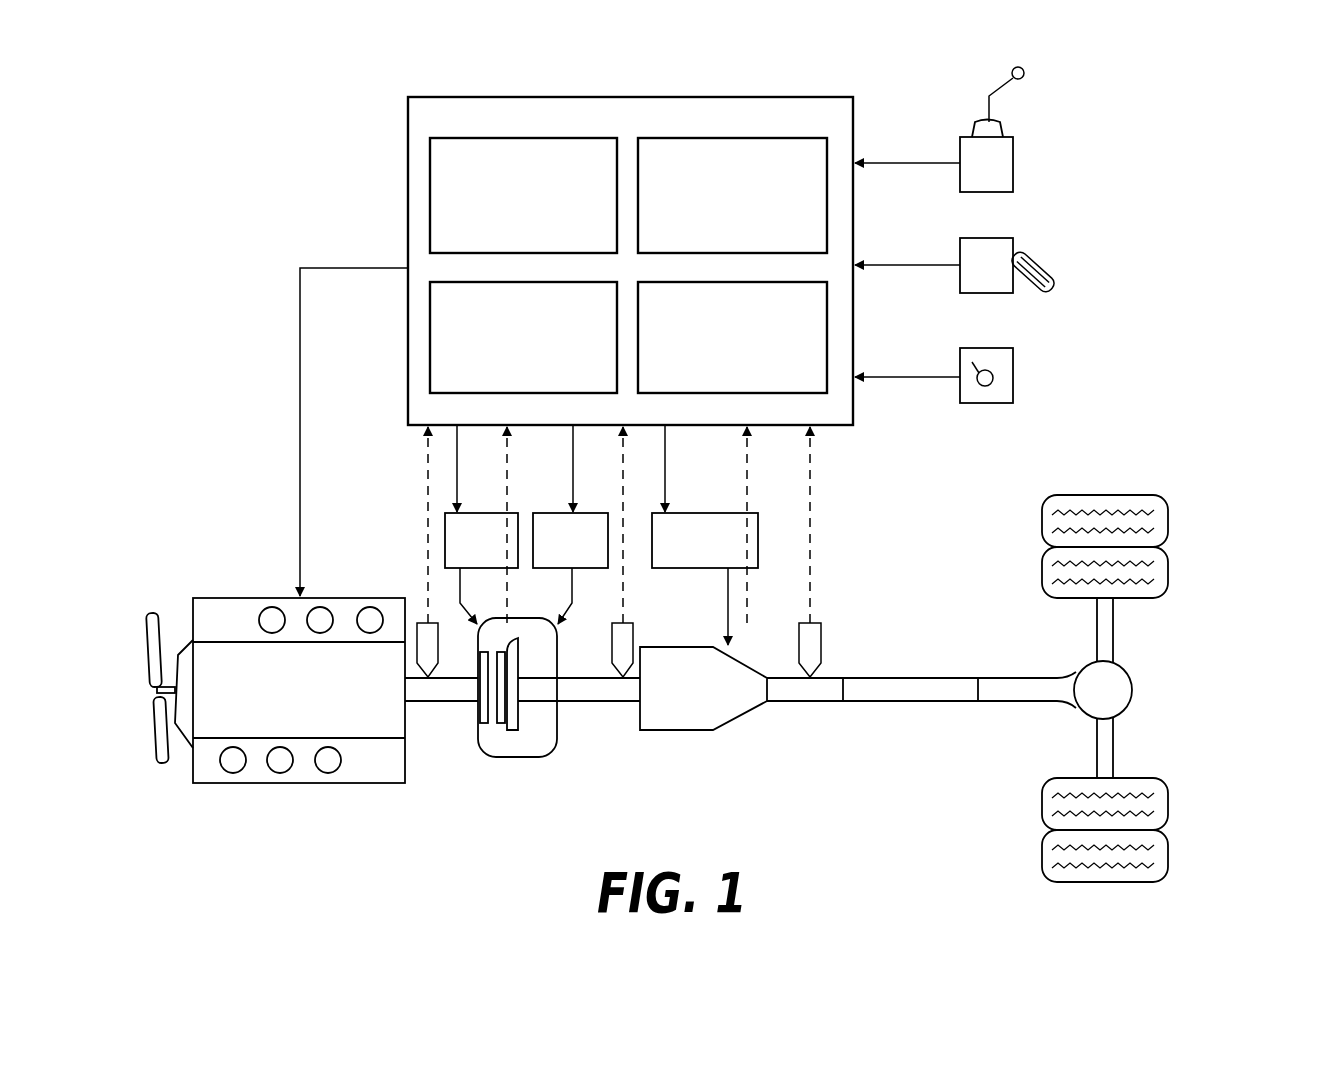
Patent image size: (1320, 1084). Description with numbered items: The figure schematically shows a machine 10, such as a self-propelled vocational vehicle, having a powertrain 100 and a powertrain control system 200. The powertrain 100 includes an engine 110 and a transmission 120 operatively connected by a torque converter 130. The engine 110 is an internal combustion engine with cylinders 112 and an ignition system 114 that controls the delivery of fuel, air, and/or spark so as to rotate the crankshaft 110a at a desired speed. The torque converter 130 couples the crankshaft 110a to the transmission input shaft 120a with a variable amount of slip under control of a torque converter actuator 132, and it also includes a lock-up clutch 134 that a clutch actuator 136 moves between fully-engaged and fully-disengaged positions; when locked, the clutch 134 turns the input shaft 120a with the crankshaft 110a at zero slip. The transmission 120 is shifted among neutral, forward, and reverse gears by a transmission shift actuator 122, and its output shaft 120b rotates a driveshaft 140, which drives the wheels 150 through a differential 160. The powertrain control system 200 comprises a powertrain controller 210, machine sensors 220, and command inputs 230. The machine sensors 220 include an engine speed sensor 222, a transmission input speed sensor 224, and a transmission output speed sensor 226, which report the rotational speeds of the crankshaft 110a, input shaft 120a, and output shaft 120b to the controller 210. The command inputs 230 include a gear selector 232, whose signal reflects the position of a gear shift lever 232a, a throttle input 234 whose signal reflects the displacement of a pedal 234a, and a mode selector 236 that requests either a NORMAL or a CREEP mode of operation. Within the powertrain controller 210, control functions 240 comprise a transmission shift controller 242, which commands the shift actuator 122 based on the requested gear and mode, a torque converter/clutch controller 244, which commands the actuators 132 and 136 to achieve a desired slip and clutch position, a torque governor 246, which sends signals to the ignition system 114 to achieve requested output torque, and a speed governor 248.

The machine 10 is at (933, 516).
The powertrain 100 is at (803, 835).
The engine 110 is at (275, 685).
The crankshaft 110a is at (425, 703).
The cylinders 112 is at (233, 773).
The ignition system 114 is at (203, 596).
The transmission 120 is at (670, 704).
The transmission input shaft 120a is at (575, 705).
The transmission output shaft 120b is at (790, 705).
The transmission shift actuator 122 is at (729, 554).
The torque converter 130 is at (517, 727).
The torque converter actuator 132 is at (595, 554).
The lock-up clutch 134 is at (530, 757).
The clutch actuator 136 is at (505, 554).
The driveshaft 140 is at (908, 705).
The wheels 150 is at (1170, 520).
The differential 160 is at (1085, 702).
The powertrain control system 200 is at (333, 122).
The powertrain controller 210 is at (606, 129).
The machine sensors 220 is at (850, 575).
The engine speed sensor 222 is at (418, 620).
The transmission input speed sensor 224 is at (634, 630).
The transmission output speed sensor 226 is at (822, 630).
The command inputs 230 is at (912, 442).
The gear selector 232 is at (1010, 177).
The gear shift lever 232a is at (1025, 76).
The throttle input 234 is at (1010, 278).
The pedal 234a is at (1055, 290).
The mode selector 236 is at (1013, 380).
The control functions 240 is at (420, 392).
The transmission shift controller 242 is at (499, 204).
The torque converter/clutch controller 244 is at (709, 204).
The torque governor 246 is at (499, 347).
The speed governor 248 is at (709, 347).